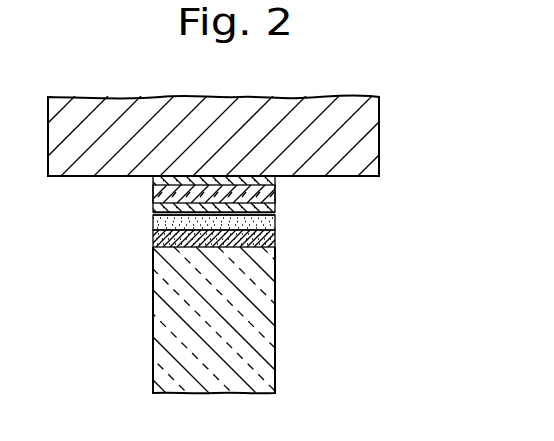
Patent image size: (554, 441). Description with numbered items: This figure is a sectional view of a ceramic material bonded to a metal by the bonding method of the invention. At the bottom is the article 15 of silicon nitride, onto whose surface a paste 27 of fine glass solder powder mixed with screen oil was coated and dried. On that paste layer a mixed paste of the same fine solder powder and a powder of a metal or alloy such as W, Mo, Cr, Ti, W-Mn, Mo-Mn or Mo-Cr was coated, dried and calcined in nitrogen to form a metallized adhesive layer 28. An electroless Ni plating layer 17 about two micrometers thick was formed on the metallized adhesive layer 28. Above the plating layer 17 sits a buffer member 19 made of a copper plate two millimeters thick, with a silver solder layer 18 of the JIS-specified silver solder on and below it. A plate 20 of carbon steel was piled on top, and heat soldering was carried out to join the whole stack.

The plate 20 is at (379, 136).
The silver solder layer 18 is at (275, 182).
The buffer member 19 is at (153, 188).
The electroless Ni plating layer 17 is at (153, 215).
The metallized adhesive layer 28 is at (275, 222).
The paste 27 is at (275, 235).
The article 15 is at (275, 334).